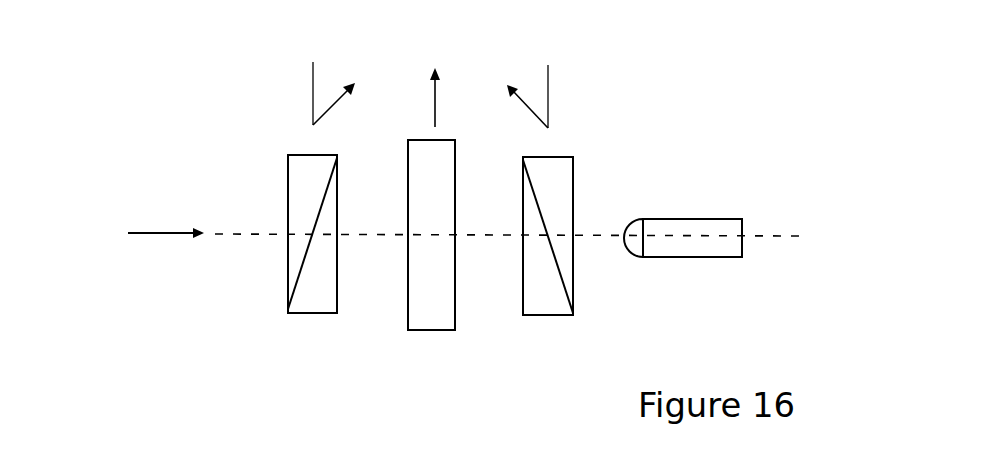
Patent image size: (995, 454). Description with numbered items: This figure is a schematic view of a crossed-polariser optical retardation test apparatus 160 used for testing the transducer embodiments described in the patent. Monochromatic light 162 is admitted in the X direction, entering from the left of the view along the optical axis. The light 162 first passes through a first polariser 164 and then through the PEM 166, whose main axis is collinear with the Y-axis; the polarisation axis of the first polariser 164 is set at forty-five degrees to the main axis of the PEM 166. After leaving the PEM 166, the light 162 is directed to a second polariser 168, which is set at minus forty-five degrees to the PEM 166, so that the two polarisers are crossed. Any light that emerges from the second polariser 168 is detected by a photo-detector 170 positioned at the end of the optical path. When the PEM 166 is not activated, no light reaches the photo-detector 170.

The crossed-polariser optical retardation test apparatus 160 is at (694, 85).
The monochromatic light 162 is at (165, 210).
The first polariser 164 is at (287, 288).
The PEM 166 is at (455, 293).
The second polariser 168 is at (573, 293).
The photo-detector 170 is at (722, 257).